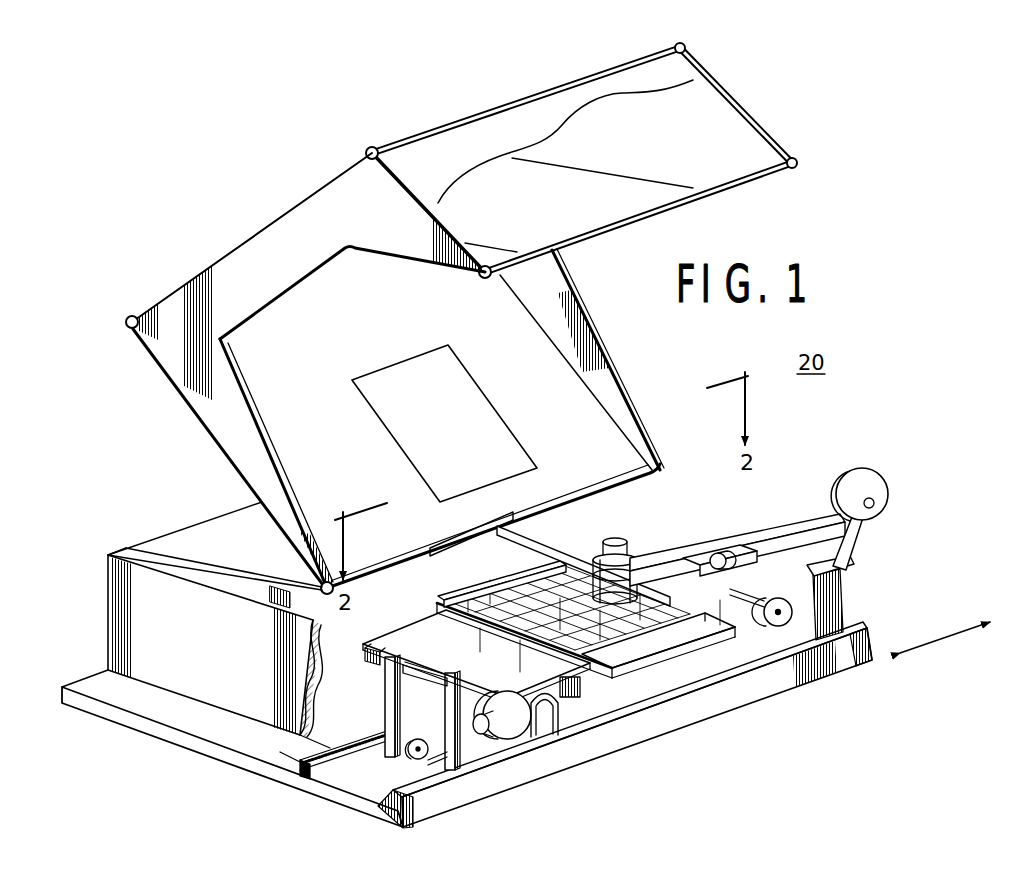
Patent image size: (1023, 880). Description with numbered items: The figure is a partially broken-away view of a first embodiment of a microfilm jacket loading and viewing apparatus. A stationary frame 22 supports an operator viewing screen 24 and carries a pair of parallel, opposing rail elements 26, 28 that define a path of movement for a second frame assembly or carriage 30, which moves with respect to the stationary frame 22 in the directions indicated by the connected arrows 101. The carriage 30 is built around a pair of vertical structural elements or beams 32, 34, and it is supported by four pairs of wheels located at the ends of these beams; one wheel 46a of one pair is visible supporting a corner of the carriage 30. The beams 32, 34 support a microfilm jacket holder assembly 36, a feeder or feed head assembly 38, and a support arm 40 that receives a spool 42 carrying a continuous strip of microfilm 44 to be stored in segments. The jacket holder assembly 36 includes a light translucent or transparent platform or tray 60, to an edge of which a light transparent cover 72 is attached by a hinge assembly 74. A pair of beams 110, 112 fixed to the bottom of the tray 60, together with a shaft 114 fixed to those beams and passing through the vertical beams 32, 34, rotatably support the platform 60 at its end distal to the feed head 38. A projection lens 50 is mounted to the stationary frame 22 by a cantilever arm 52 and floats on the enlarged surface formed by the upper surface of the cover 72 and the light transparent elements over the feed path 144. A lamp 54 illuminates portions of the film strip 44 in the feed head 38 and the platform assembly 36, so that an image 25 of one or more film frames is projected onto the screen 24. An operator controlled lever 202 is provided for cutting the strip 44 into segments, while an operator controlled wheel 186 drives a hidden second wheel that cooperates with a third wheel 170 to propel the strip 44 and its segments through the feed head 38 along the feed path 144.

The stationary frame 22 is at (198, 740).
The operator viewing screen 24 is at (200, 382).
The image 25 is at (360, 391).
The rail element 26 is at (305, 768).
The rail element 28 is at (382, 806).
The second frame assembly or carriage 30 is at (752, 652).
The vertical structural element or beam 32 is at (385, 708).
The vertical structural element or beam 34 is at (438, 757).
The microfilm jacket holder assembly 36 is at (460, 590).
The feeder or feed head assembly 38 is at (667, 555).
The support arm 40 is at (858, 542).
The spool 42 is at (888, 495).
The continuous strip of microfilm 44 is at (820, 523).
The wheel 46a is at (408, 756).
The projection lens 50 is at (624, 542).
The cantilever arm 52 is at (558, 522).
The lamp 54 is at (518, 722).
The platform or tray 60 is at (416, 635).
The light transparent cover 72 is at (722, 635).
The hinge assembly 74 is at (520, 578).
The connected arrows 101 is at (945, 648).
The beam 110 is at (363, 660).
The beam 112 is at (580, 690).
The shaft 114 is at (428, 681).
The feed path 144 is at (710, 553).
The third wheel 170 is at (727, 548).
The operator controlled wheel 186 is at (776, 625).
The operator controlled lever 202 is at (855, 566).